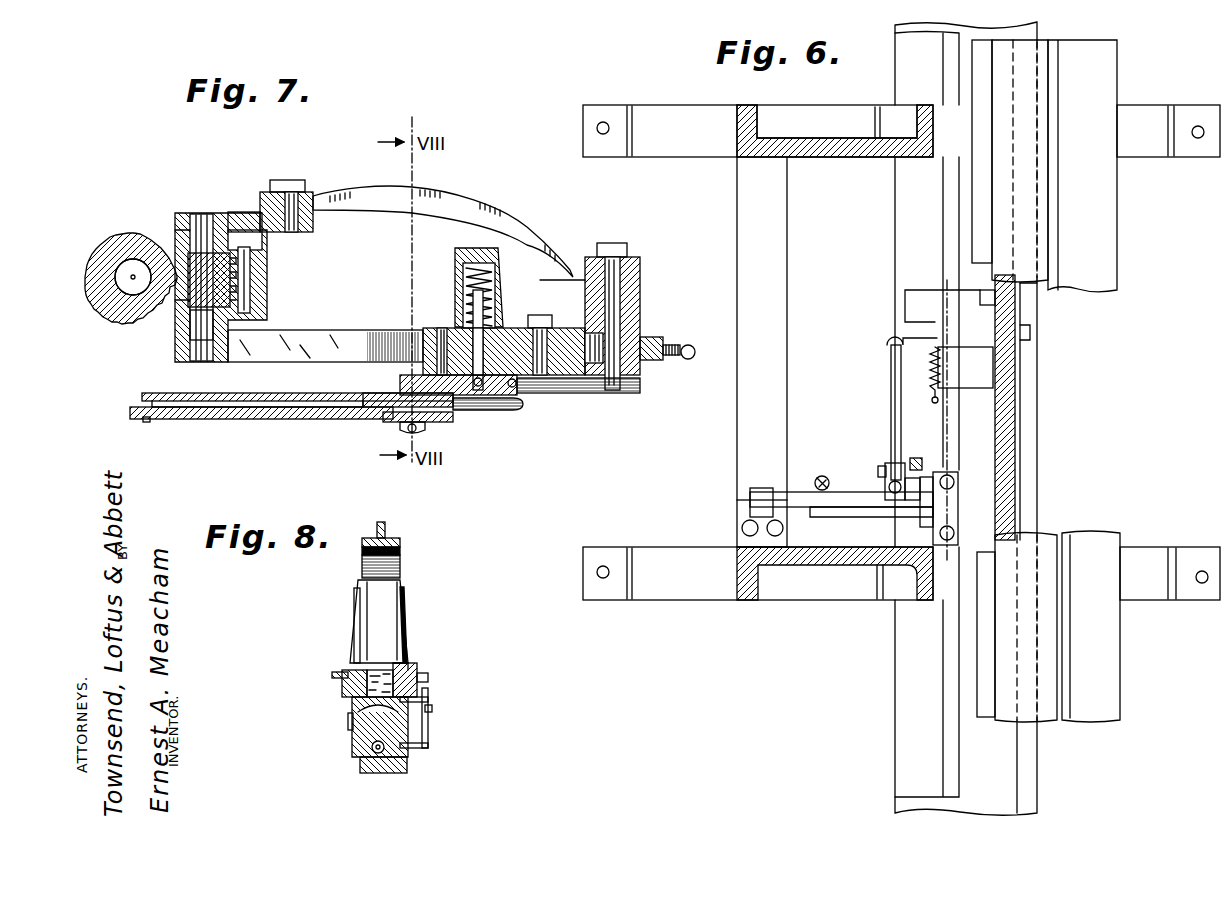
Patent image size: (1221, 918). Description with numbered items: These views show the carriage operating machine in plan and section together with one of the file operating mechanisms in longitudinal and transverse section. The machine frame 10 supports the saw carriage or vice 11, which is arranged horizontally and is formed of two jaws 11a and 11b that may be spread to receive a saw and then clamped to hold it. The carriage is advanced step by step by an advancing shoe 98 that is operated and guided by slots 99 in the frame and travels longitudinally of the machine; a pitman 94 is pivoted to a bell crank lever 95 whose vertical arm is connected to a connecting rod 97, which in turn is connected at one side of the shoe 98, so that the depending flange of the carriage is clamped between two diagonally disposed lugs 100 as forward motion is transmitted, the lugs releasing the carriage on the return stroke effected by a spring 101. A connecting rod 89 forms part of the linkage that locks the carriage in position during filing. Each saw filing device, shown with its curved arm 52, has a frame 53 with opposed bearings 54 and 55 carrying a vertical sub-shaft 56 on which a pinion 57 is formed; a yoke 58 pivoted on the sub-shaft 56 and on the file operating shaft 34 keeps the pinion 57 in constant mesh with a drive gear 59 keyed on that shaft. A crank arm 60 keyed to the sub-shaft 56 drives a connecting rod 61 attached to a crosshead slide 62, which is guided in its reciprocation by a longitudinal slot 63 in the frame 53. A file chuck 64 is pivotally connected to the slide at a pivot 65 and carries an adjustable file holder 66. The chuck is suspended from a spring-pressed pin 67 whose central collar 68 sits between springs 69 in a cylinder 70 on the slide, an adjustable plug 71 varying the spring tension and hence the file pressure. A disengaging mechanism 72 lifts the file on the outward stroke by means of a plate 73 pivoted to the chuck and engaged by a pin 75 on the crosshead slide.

In FIG. 6, the frame 10 is at (677, 580).
In FIG. 6, the saw carriage or vice 11 is at (1060, 77).
In FIG. 6, the jaw 11a is at (1030, 547).
In FIG. 6, the jaw 11b is at (1098, 93).
In FIG. 7, the file operating shaft 34 is at (137, 283).
In FIG. 7, the curved arm 52 is at (439, 190).
In FIG. 8, the curved arm 52 is at (351, 600).
In FIG. 7, the frame 53 is at (314, 340).
In FIG. 8, the frame 53 is at (338, 688).
In FIG. 7, the bearing 54 is at (175, 347).
In FIG. 7, the bearing 55 is at (175, 237).
In FIG. 7, the sub-shaft 56 is at (198, 325).
In FIG. 7, the pinion 57 is at (208, 272).
In FIG. 7, the yoke 58 is at (240, 277).
In FIG. 7, the drive gear 59 is at (107, 252).
In FIG. 7, the crank arm 60 is at (235, 220).
In FIG. 7, the connecting rod 61 is at (362, 185).
In FIG. 8, the connecting rod 61 is at (395, 540).
In FIG. 7, the crosshead slide 62 is at (573, 337).
In FIG. 7, the longitudinal slot 63 is at (360, 343).
In FIG. 8, the longitudinal slot 63 is at (380, 682).
In FIG. 7, the file chuck 64 is at (400, 387).
In FIG. 8, the file chuck 64 is at (368, 730).
In FIG. 7, the pivot 65 is at (517, 388).
In FIG. 7, the file holder 66 is at (445, 425).
In FIG. 8, the file holder 66 is at (375, 740).
In FIG. 7, the spring-pressed pin 67 is at (588, 257).
In FIG. 7, the central collar 68 is at (483, 298).
In FIG. 7, the springs 69 is at (480, 267).
In FIG. 7, the cylinder 70 is at (487, 303).
In FIG. 8, the cylinder 70 is at (385, 610).
In FIG. 7, the adjustable plug 71 is at (467, 250).
In FIG. 8, the disengaging mechanism 72 is at (425, 727).
In FIG. 8, the plate 73 is at (410, 682).
In FIG. 8, the pin 75 is at (433, 708).
In FIG. 6, the connecting rod 89 is at (818, 480).
In FIG. 6, the pitman 94 is at (913, 458).
In FIG. 6, the bell crank lever 95 is at (887, 485).
In FIG. 6, the connecting rod 97 is at (891, 392).
In FIG. 6, the advancing shoe 98 is at (927, 303).
In FIG. 6, the slots 99 is at (950, 282).
In FIG. 6, the lugs 100 is at (1027, 337).
In FIG. 6, the spring 101 is at (930, 363).